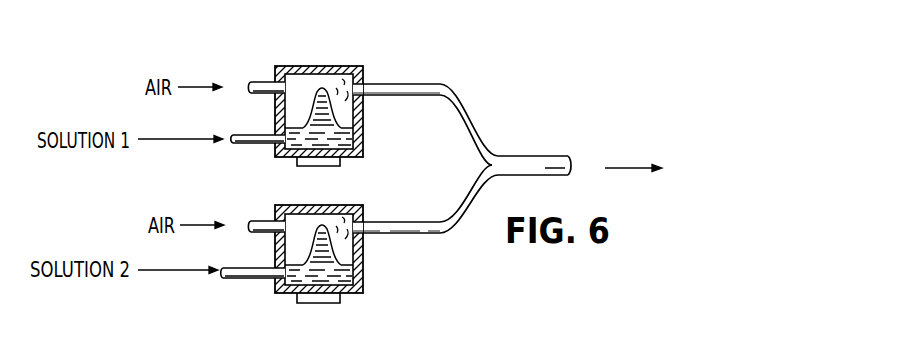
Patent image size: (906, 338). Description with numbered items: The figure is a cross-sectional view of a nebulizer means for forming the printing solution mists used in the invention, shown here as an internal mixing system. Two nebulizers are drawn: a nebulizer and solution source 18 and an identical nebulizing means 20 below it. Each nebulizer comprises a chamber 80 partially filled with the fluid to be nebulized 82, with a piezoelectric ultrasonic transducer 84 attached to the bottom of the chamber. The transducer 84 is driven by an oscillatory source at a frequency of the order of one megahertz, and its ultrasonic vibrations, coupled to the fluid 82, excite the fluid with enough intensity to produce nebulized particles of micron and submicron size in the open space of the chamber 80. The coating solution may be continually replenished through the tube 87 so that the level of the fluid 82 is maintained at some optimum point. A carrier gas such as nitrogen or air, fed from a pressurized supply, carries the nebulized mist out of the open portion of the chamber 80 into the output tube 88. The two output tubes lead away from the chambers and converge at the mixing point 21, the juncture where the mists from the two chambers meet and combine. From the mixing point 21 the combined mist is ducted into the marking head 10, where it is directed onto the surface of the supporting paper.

The marking head 10 is at (715, 183).
The nebulizer and solution source 18 is at (323, 116).
The nebulizing means 20 is at (355, 270).
The mixing point 21 is at (505, 142).
The chamber 80 is at (293, 103).
The fluid to be nebulized 82 is at (348, 140).
The piezoelectric ultrasonic transducer 84 is at (340, 163).
The tube 87 is at (258, 146).
The output tube 88 is at (446, 86).